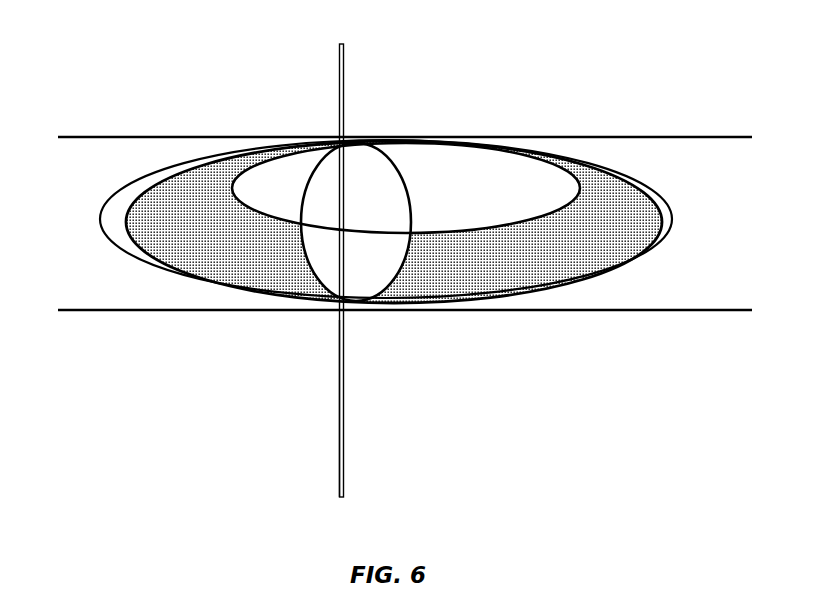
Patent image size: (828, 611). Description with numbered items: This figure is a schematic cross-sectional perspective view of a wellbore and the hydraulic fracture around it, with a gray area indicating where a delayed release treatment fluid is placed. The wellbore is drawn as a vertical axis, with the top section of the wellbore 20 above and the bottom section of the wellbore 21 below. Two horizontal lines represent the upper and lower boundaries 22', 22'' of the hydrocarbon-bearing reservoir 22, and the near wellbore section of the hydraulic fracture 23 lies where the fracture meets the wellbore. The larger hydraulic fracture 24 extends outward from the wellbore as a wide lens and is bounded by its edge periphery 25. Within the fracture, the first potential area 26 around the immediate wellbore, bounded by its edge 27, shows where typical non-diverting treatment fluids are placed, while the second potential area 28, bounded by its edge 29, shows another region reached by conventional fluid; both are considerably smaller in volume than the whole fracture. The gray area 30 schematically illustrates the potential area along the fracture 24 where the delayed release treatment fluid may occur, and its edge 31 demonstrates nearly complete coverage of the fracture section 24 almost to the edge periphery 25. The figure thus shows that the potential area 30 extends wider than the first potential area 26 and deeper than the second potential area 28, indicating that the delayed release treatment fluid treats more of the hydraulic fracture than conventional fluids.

The top section of the wellbore 20 is at (341, 44).
The bottom section of the wellbore 21 is at (339, 441).
The hydrocarbon-bearing reservoir 22 is at (73, 223).
The upper boundary of the hydrocarbon-bearing reservoir 22' is at (405, 124).
The lower boundary of the hydrocarbon-bearing reservoir 22'' is at (405, 323).
The near wellbore section of the hydraulic fracture 23 is at (338, 210).
The hydraulic fracture 24 is at (112, 227).
The edge periphery 25 is at (668, 208).
The first potential area 26 is at (388, 257).
The edge of the first potential area 27 is at (411, 200).
The second potential area 28 is at (265, 207).
The edge of the second potential area 29 is at (232, 189).
The potential area of delayed release treatment fluid 30 is at (221, 170).
The edge of the delayed release treatment fluid region 31 is at (124, 219).